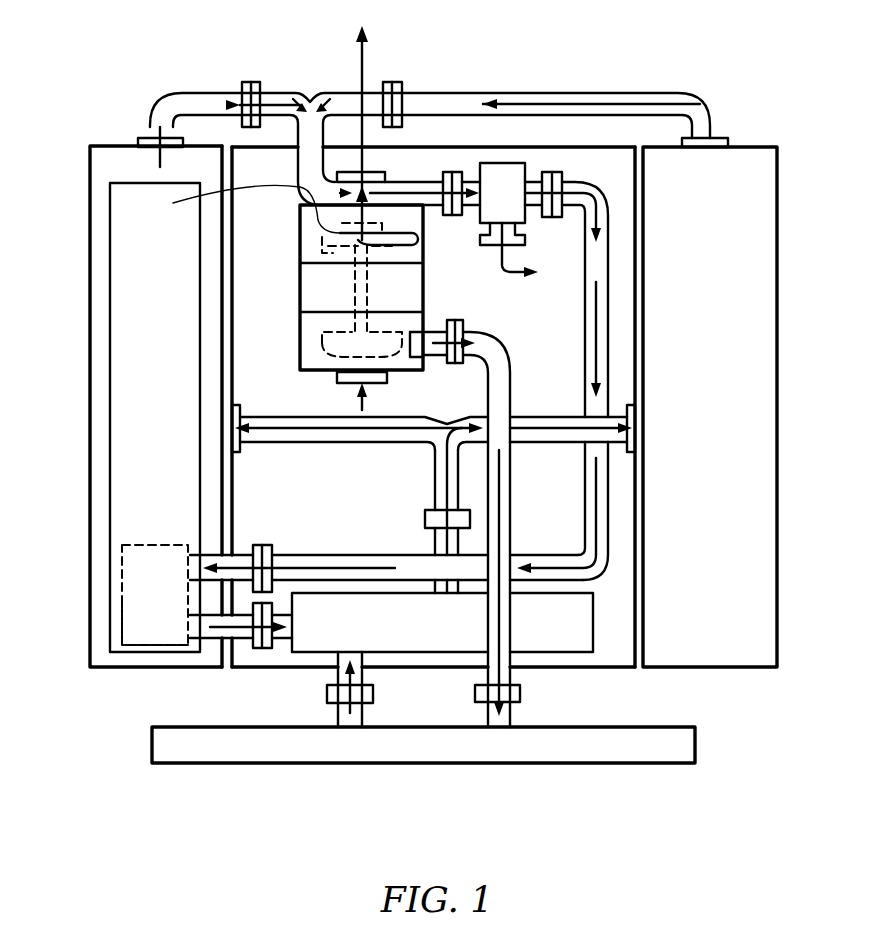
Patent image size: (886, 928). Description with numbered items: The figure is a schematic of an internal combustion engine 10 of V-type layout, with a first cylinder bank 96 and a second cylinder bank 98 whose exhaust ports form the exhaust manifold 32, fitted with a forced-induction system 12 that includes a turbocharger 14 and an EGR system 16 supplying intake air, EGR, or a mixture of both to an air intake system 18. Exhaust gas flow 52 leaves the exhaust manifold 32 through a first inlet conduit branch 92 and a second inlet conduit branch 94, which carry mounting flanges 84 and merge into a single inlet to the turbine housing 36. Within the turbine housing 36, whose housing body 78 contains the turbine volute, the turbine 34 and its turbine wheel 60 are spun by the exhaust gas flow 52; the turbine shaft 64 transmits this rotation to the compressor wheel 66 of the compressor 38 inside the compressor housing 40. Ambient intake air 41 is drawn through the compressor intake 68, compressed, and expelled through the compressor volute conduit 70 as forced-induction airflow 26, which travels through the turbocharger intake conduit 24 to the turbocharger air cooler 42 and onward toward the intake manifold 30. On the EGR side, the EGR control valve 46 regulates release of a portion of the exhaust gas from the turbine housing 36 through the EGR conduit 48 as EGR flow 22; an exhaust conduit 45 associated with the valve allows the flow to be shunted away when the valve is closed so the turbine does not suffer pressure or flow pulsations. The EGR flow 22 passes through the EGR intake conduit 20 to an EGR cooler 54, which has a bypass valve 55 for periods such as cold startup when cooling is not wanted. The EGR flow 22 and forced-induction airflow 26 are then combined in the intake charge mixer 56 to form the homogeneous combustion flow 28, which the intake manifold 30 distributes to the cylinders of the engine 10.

The internal combustion engine 10 is at (737, 362).
The forced-induction system 12 is at (310, 297).
The turbocharger 14 is at (410, 165).
The EGR system 16 is at (550, 153).
The air intake system 18 is at (583, 530).
The EGR intake conduit 20 is at (612, 335).
The EGR flow 22 is at (598, 225).
The turbocharger intake conduit 24 is at (512, 388).
The forced-induction airflow 26 is at (444, 492).
The combustion flow 28 is at (358, 430).
The intake manifold 30 is at (232, 513).
The exhaust manifold 32 is at (140, 137).
The turbine 34 is at (330, 255).
The turbine housing 36 is at (325, 242).
The compressor 38 is at (352, 358).
The compressor housing 40 is at (322, 333).
The ambient intake air 41 is at (366, 400).
The turbocharger air cooler 42 is at (528, 765).
The exhaust conduit 45 is at (517, 232).
The EGR control valve 46 is at (527, 162).
The EGR conduit 48 is at (427, 180).
The exhaust gas flow 52 is at (193, 103).
The EGR cooler 54 is at (120, 573).
The bypass valve 55 is at (120, 615).
The intake charge mixer 56 is at (597, 625).
The turbine wheel 60 is at (322, 256).
The turbine shaft 64 is at (352, 282).
The compressor wheel 66 is at (348, 342).
The compressor intake 68 is at (347, 383).
The compressor volute conduit 70 is at (435, 328).
The housing body 78 is at (283, 215).
The mounting flanges 84 is at (253, 84).
The first inlet conduit branch 92 is at (287, 95).
The second inlet conduit branch 94 is at (323, 95).
The first cylinder bank 96 is at (108, 512).
The second cylinder bank 98 is at (778, 340).